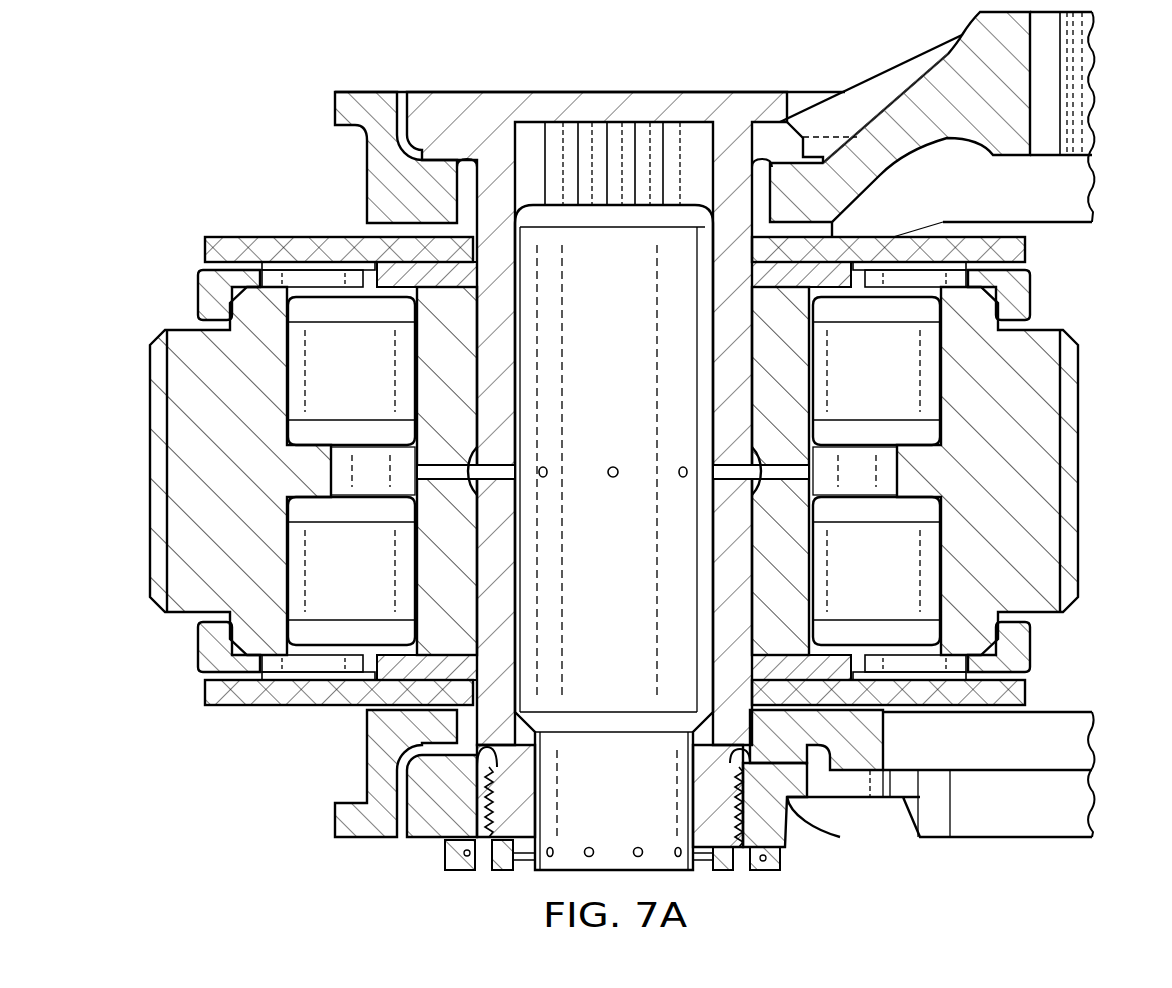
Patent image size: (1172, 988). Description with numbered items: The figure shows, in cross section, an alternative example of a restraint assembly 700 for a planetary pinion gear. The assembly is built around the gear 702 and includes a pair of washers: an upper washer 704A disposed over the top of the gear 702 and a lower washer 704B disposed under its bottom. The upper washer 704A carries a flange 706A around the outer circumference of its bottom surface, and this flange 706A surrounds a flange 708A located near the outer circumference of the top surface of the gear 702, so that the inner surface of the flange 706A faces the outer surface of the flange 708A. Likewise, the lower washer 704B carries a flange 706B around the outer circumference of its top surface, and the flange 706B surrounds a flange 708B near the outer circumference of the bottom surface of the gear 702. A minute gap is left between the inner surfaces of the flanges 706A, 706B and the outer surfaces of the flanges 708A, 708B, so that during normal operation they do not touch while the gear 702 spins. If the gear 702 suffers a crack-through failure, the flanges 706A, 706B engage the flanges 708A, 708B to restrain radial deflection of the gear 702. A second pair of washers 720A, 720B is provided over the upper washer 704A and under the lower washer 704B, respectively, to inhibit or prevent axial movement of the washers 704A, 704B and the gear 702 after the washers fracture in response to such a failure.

The restraint assembly 700 is at (1103, 240).
The gear 702 is at (150, 472).
The upper washer 704A is at (307, 268).
The lower washer 704B is at (343, 677).
The flange of upper washer 706A is at (205, 297).
The flange of lower washer 706B is at (205, 642).
The flange of gear top surface 708A is at (246, 287).
The flange of gear bottom surface 708B is at (262, 650).
The second pair washer (upper) 720A is at (205, 250).
The second pair washer (lower) 720B is at (205, 692).